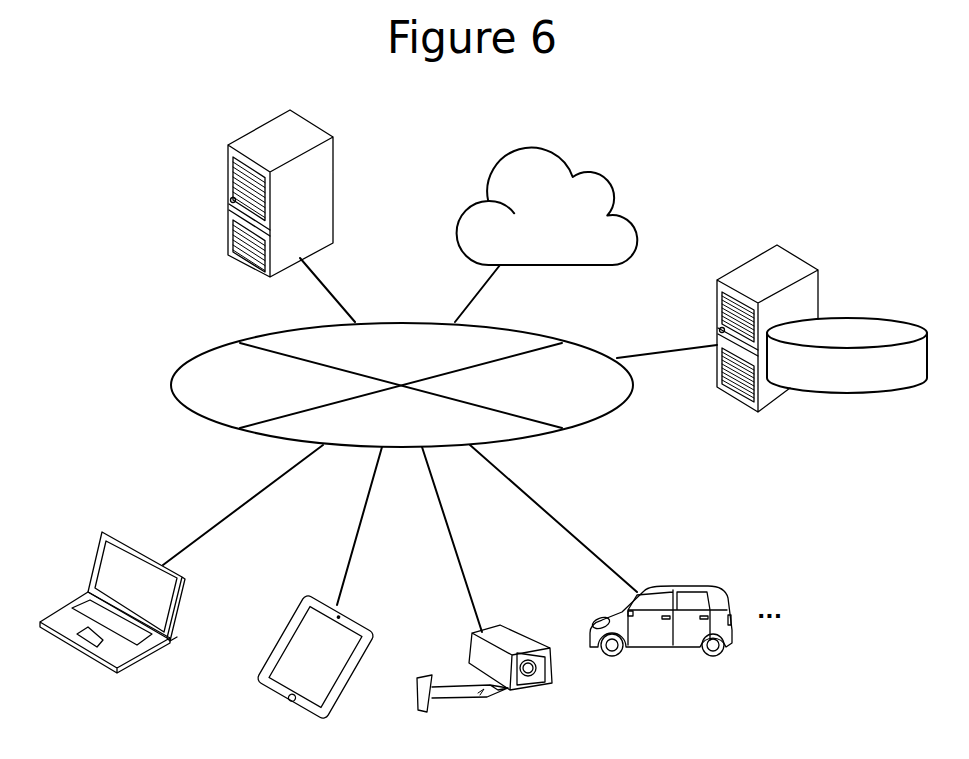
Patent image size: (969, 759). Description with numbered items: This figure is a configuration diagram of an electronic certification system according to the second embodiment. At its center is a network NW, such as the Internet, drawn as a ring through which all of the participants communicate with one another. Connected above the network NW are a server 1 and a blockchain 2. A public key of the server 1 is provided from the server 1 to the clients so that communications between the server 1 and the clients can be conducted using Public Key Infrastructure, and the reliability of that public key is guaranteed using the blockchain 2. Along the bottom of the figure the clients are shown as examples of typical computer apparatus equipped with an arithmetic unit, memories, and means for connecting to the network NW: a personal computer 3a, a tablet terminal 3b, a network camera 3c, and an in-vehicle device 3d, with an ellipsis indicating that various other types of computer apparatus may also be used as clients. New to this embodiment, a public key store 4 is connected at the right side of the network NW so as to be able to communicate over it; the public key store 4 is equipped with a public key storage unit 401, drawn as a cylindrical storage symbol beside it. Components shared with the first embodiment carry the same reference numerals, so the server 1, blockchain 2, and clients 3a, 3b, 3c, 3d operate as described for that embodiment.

The server 1 is at (258, 131).
The blockchain 2 is at (495, 164).
The public key store 4 is at (746, 263).
The public key storage unit 401 is at (848, 318).
The network NW is at (172, 385).
The personal computer 3a is at (62, 610).
The tablet terminal 3b is at (282, 636).
The network camera 3c is at (472, 631).
The in-vehicle device 3d is at (595, 616).